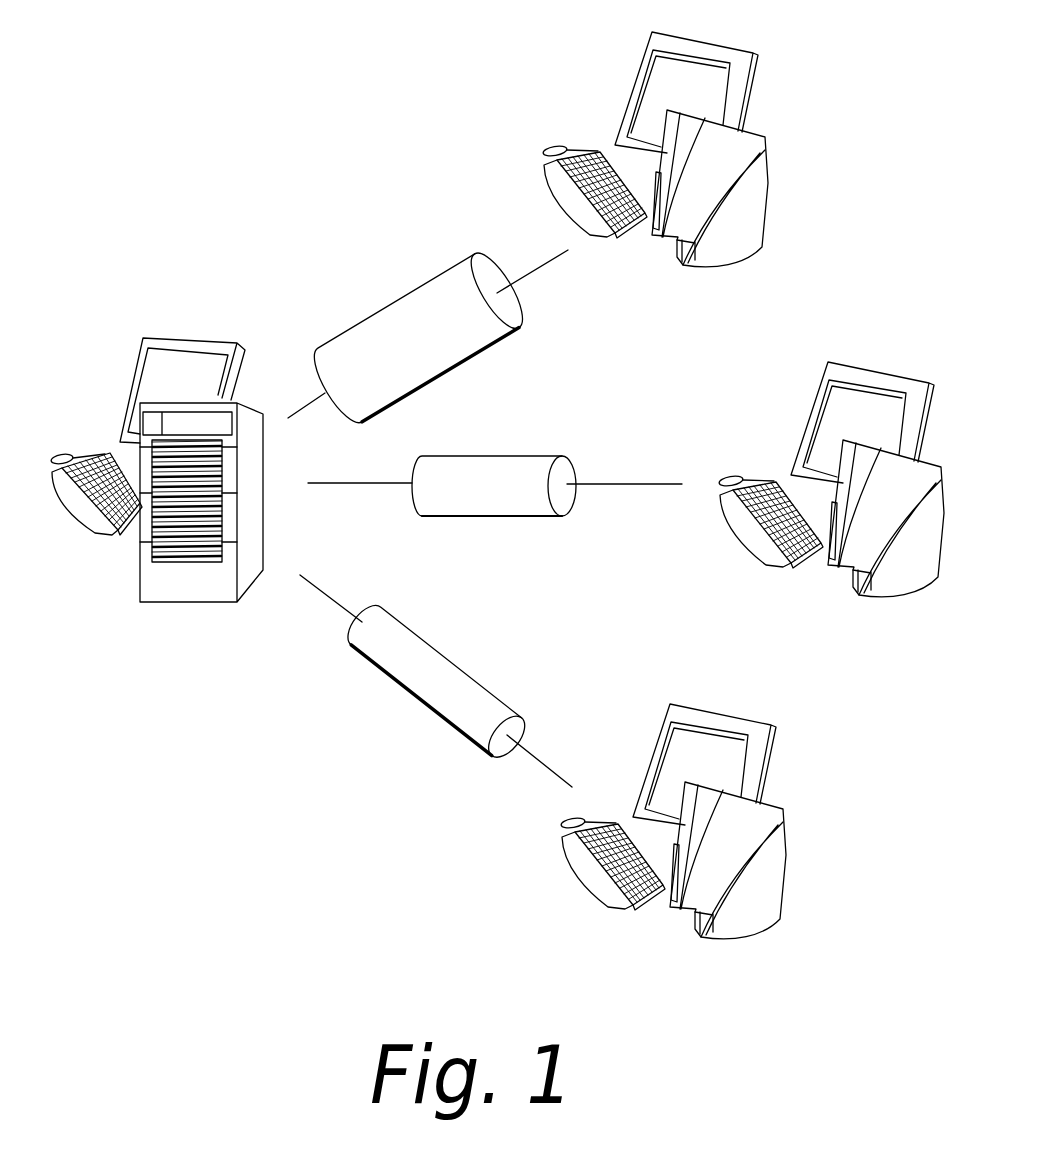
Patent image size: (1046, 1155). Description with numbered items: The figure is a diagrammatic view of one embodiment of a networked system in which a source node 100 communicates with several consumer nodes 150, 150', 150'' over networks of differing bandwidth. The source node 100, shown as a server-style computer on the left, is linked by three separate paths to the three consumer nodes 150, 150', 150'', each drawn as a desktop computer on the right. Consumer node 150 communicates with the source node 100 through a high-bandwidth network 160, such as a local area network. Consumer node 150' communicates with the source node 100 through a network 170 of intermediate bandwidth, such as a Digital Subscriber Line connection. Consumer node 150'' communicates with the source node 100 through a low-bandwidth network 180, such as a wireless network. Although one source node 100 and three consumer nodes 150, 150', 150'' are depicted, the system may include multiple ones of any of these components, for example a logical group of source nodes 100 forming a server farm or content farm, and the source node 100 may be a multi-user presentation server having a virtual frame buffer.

The source node 100 is at (147, 357).
The consumer node 150 is at (641, 138).
The consumer node 150' is at (831, 469).
The consumer node 150'' is at (746, 820).
The high-bandwidth network 160 is at (422, 293).
The network 170 is at (495, 510).
The low-bandwidth network 180 is at (425, 705).